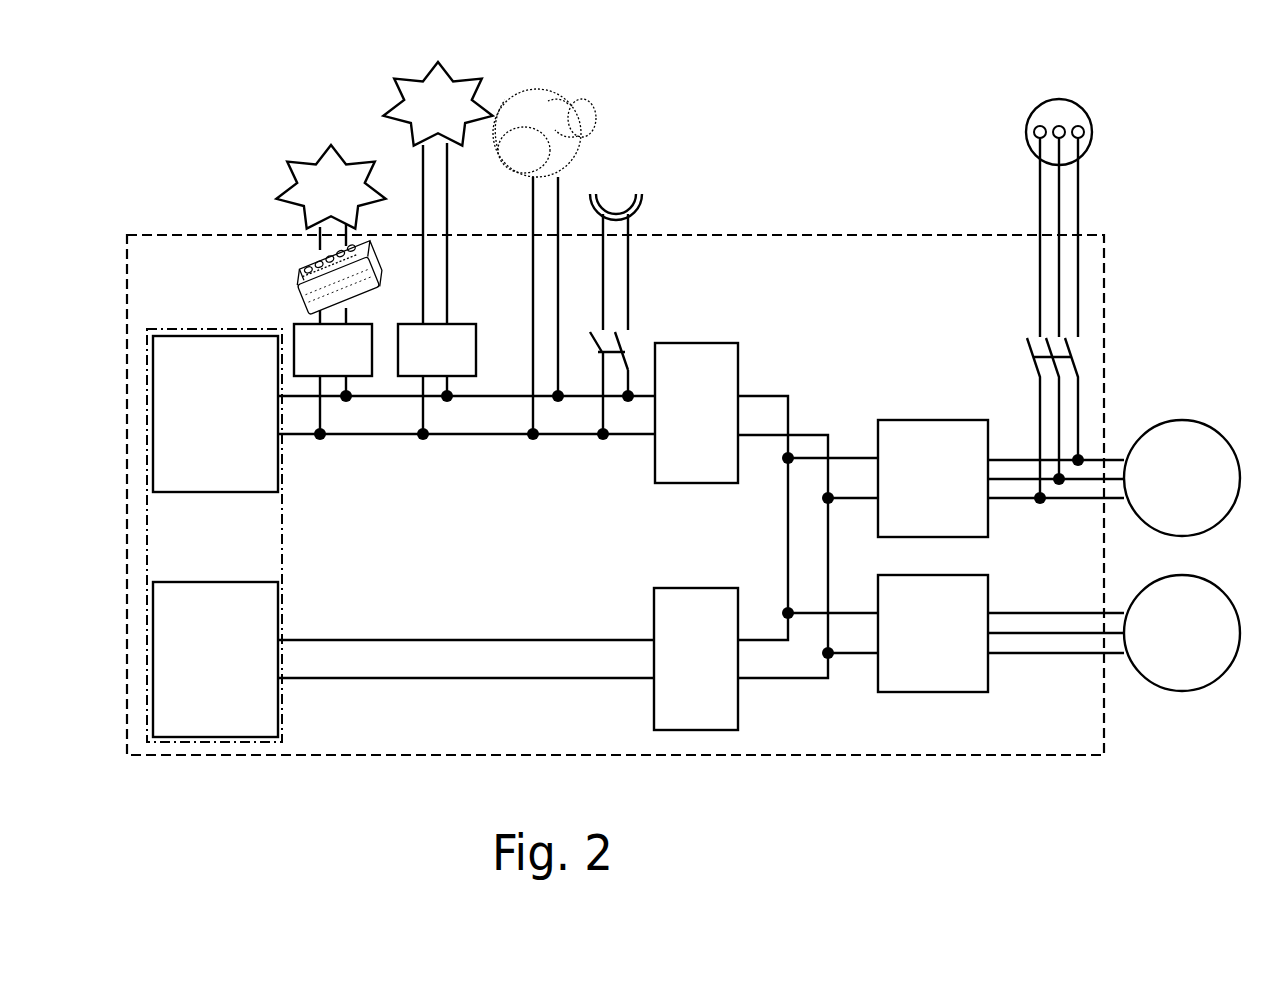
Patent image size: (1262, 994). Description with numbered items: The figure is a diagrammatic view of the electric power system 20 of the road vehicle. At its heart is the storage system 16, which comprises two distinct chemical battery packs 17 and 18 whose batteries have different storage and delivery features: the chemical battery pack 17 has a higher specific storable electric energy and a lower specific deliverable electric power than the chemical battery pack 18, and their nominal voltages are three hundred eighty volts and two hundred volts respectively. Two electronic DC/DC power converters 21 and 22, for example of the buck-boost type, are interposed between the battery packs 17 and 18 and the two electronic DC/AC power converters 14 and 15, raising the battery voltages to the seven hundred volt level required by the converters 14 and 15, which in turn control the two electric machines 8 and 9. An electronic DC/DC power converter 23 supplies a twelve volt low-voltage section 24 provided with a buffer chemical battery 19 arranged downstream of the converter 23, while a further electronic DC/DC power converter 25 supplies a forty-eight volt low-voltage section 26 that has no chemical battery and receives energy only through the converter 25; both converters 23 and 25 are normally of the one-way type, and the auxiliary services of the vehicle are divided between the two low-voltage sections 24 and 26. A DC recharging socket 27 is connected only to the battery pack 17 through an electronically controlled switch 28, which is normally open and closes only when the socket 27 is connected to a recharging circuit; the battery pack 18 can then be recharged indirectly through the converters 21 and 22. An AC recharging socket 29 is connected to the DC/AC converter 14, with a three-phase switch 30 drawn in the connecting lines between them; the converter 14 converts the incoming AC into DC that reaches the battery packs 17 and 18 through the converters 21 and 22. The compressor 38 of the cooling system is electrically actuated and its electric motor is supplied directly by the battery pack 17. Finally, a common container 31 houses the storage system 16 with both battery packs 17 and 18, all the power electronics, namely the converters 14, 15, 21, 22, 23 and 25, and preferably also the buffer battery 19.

The electric machine 8 is at (1182, 478).
The electric machine 9 is at (1182, 633).
The electronic DC/AC power converter 14 is at (943, 427).
The electronic DC/AC power converter 15 is at (923, 685).
The storage system 16 is at (306, 542).
The chemical battery pack 17 is at (215, 414).
The chemical battery pack 18 is at (215, 659).
The buffer chemical battery 19 is at (302, 277).
The electric power system 20 is at (1059, 813).
The electronic DC/DC power converter 21 is at (705, 350).
The electronic DC/DC power converter 22 is at (711, 717).
The electronic DC/DC power converter 23 is at (302, 330).
The low-voltage section 24 is at (330, 234).
The electronic DC/DC power converter 25 is at (465, 324).
The low-voltage section 26 is at (437, 193).
The DC recharging socket 27 is at (644, 196).
The electronically controlled switch 28 is at (597, 352).
The AC recharging socket 29 is at (1082, 113).
The three-phase switch 30 is at (1070, 348).
The common container 31 is at (853, 757).
The compressor 38 is at (547, 105).